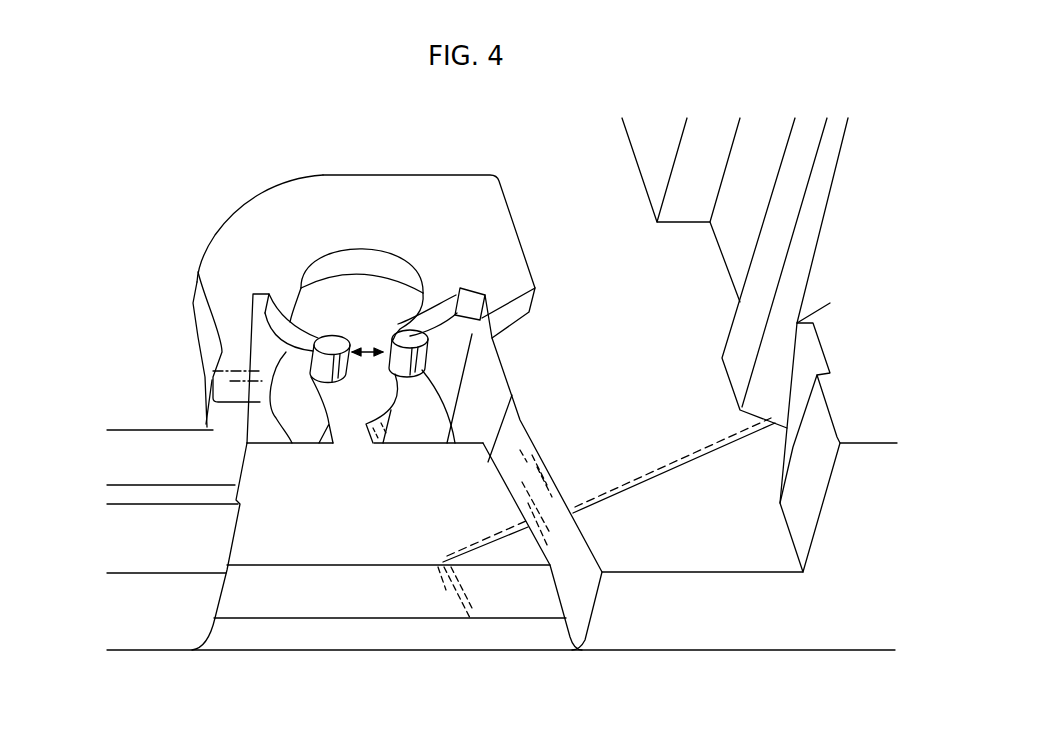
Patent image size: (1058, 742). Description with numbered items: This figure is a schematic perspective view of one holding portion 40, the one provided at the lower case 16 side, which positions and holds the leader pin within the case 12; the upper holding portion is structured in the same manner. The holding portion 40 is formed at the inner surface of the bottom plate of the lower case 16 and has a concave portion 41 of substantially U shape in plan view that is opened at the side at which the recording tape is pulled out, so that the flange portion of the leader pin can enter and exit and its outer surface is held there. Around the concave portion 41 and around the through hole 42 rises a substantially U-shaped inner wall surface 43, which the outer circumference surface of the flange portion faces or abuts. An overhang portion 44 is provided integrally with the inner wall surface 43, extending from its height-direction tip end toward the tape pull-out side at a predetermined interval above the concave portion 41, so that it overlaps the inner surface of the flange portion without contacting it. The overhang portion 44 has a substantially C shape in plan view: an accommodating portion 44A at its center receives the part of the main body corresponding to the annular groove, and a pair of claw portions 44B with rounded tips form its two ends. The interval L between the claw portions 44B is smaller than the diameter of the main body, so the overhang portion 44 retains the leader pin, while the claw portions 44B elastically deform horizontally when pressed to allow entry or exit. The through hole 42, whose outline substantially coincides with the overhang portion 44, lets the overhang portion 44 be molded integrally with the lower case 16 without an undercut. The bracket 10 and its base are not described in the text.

The holding arm 10 is at (856, 271).
The case 12 is at (740, 651).
The lower case 16 is at (152, 653).
The holding portion 40 is at (394, 652).
The concave portion 41 is at (312, 520).
The through hole 42 is at (417, 425).
The inner wall surface 43 is at (364, 296).
The overhang portion 44 is at (343, 245).
The accommodating portion 44A is at (363, 263).
The claw portion 44B is at (333, 342).
The interval L is at (372, 354).